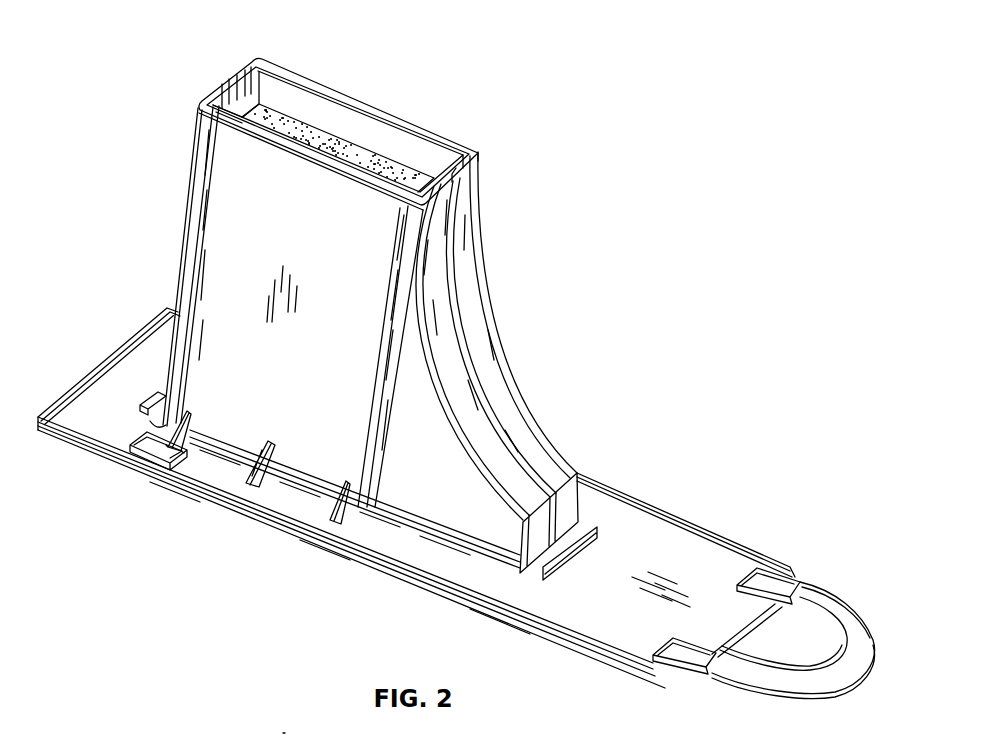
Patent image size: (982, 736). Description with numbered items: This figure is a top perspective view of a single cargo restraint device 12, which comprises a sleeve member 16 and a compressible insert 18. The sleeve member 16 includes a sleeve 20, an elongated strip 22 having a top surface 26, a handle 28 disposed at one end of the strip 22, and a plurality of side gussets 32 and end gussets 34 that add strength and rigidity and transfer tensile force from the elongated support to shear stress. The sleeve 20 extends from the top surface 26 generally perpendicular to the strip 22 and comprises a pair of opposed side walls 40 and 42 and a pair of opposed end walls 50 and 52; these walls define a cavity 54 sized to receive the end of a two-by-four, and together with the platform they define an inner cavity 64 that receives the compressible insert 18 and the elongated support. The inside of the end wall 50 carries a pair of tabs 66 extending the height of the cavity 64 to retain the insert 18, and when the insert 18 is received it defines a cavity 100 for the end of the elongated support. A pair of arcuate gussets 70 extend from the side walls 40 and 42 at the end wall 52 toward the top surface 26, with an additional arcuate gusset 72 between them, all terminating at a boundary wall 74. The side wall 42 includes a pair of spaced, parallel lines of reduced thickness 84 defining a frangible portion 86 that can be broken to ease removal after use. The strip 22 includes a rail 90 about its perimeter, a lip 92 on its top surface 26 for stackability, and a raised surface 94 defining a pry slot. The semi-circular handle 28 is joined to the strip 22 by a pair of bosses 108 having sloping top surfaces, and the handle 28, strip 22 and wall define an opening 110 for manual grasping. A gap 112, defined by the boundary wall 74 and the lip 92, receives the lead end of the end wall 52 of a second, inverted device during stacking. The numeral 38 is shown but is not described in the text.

The cargo restraint device 12 is at (716, 298).
The sleeve member 16 is at (652, 499).
The compressible insert 18 is at (287, 128).
The sleeve 20 is at (470, 215).
The elongated strip 22 is at (690, 543).
The top surface 26 is at (572, 615).
The handle 28 is at (847, 600).
The side gussets 32 is at (187, 467).
The end gussets 34 is at (157, 391).
The hook portion 38 is at (284, 735).
The side wall 40 is at (362, 103).
The side wall 42 is at (272, 226).
The end wall 50 is at (225, 91).
The end wall 52 is at (460, 178).
The cavity 54 is at (230, 125).
The cavity 64 is at (378, 134).
The tabs 66 is at (243, 77).
The arcuate gussets 70 is at (510, 365).
The additional arcuate gusset 72 is at (482, 398).
The boundary wall 74 is at (583, 507).
The lines of reduced thickness 84 is at (187, 307).
The frangible portion 86 is at (319, 303).
The rail 90 is at (420, 578).
The lip 92 is at (618, 492).
The raised surface 94 is at (120, 455).
The cavity 100 is at (303, 100).
The bosses 108 is at (790, 578).
The opening 110 is at (740, 692).
The gap 112 is at (527, 573).